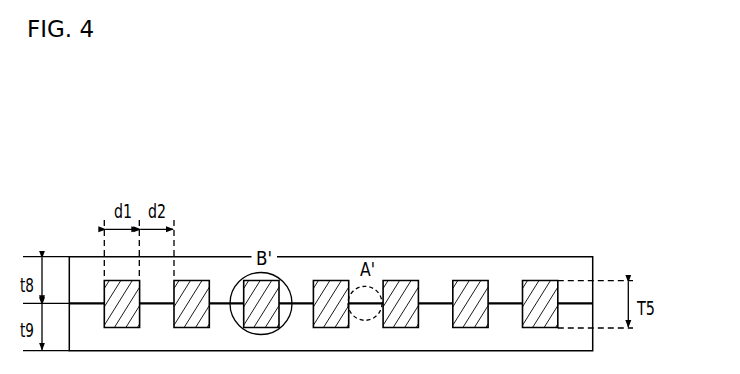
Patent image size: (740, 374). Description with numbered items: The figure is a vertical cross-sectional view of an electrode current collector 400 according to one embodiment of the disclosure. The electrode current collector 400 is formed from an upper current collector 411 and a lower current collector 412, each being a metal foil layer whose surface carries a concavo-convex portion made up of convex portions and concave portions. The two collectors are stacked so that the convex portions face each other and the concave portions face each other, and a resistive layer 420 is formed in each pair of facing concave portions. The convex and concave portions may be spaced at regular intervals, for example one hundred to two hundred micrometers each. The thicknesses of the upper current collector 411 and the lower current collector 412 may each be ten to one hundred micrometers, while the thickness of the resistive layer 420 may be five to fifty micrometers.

The electrode current collector 400 is at (289, 188).
The upper current collector 411 is at (587, 263).
The lower current collector 412 is at (588, 343).
The resistive layer 420 is at (540, 285).